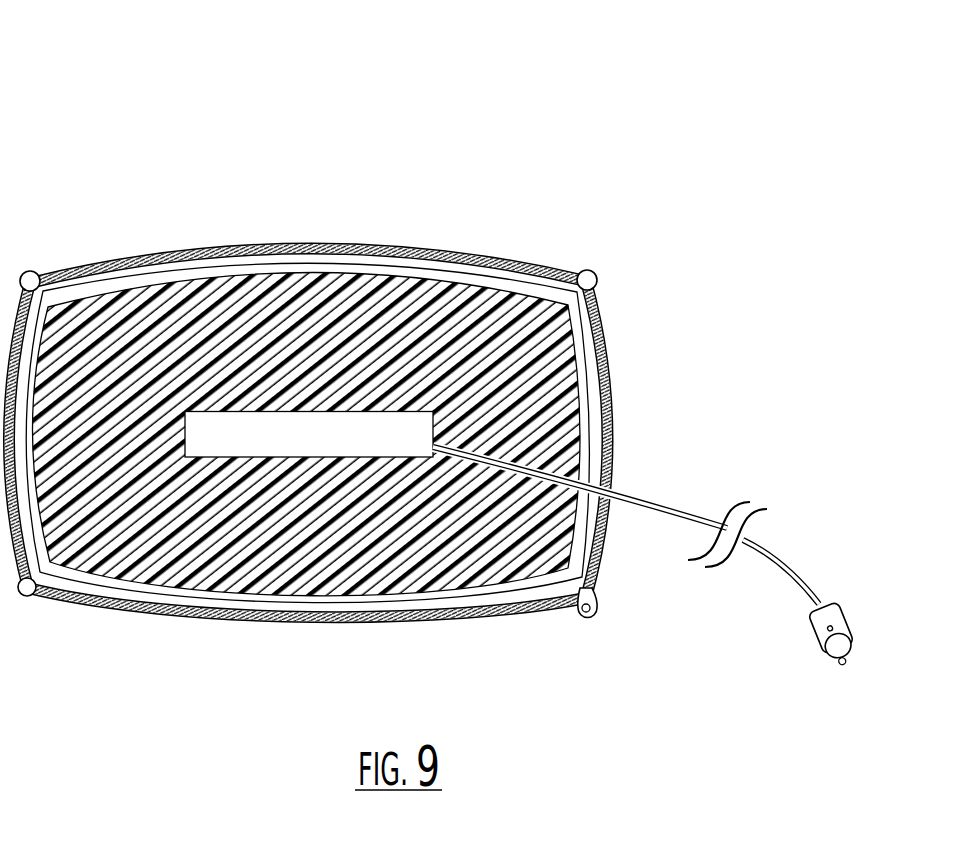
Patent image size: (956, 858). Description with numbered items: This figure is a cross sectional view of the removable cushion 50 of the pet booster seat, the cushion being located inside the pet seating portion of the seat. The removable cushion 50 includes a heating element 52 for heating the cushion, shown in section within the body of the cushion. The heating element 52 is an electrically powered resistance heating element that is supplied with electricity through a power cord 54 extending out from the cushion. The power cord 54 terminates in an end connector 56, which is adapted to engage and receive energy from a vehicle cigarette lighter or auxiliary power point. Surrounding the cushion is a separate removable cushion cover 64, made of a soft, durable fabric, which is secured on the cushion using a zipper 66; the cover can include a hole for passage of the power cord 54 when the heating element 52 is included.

The removable cushion 50 is at (100, 149).
The heating element 52 is at (436, 429).
The power cord 54 is at (788, 561).
The end connector 56 is at (852, 626).
The removable cushion cover 64 is at (518, 262).
The zipper 66 is at (599, 619).